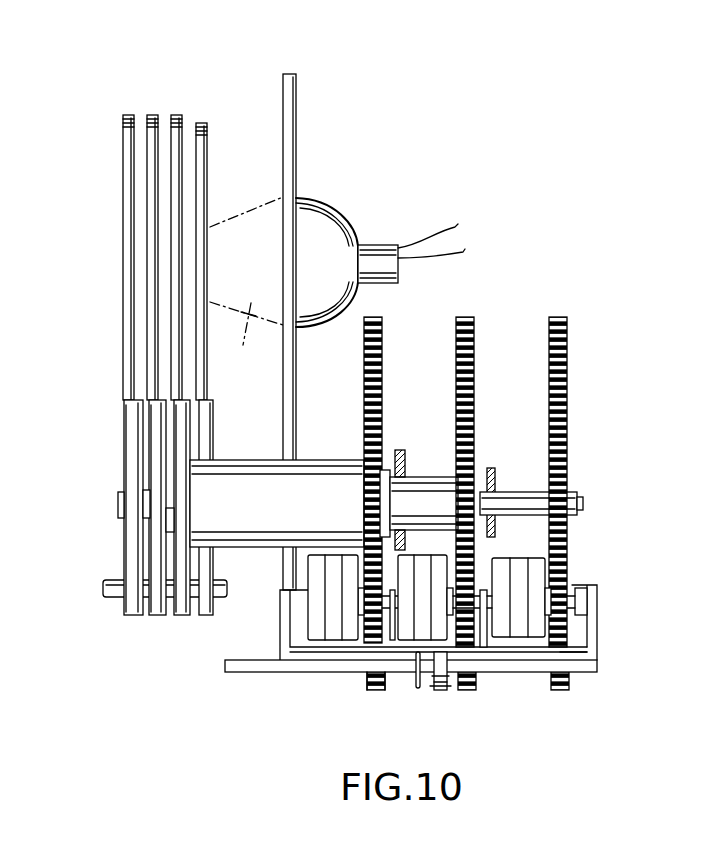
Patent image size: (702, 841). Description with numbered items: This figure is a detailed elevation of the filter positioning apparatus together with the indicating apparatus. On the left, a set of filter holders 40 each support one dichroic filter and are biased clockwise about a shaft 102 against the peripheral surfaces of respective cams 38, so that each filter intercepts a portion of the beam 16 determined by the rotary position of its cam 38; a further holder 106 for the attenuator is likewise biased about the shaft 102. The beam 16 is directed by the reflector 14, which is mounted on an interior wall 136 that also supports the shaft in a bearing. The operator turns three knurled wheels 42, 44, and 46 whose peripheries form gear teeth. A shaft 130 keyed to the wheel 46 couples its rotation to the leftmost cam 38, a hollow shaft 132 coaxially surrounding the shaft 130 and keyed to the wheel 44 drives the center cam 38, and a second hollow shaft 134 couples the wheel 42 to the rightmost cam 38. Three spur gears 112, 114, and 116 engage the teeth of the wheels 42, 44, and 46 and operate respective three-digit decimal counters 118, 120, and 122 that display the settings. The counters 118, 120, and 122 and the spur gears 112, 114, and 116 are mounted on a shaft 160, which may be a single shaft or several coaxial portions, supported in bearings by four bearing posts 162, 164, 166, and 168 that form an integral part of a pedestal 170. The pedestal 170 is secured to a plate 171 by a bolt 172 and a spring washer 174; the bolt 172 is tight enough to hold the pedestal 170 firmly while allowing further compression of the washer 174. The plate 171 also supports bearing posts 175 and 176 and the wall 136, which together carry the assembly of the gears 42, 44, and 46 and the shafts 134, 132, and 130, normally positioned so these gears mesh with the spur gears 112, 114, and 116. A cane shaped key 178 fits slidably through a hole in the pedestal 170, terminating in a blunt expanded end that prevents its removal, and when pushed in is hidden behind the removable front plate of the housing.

The reflector 14 is at (325, 216).
The beam 16 is at (246, 293).
The cams 38 is at (185, 468).
The filter holders 40 is at (126, 116).
The wheel 42 is at (383, 321).
The wheel 44 is at (476, 321).
The wheel 46 is at (568, 321).
The shaft 102 is at (110, 597).
The holder 106 is at (208, 165).
The spur gear 112 is at (368, 618).
The spur gear 114 is at (480, 580).
The spur gear 116 is at (567, 586).
The three-digit decimal counter 118 is at (333, 620).
The three-digit decimal counter 120 is at (400, 578).
The three-digit decimal counter 122 is at (524, 640).
The shaft 130 is at (526, 494).
The hollow shaft 132 is at (426, 478).
The second hollow shaft 134 is at (322, 472).
The interior wall 136 is at (303, 382).
The shaft 160 is at (580, 586).
The bearing post 162 is at (280, 628).
The bearing post 164 is at (376, 690).
The bearing post 166 is at (494, 652).
The bearing post 168 is at (590, 626).
The pedestal 170 is at (582, 651).
The plate 171 is at (248, 673).
The bolt 172 is at (438, 690).
The spring washer 174 is at (448, 692).
The bearing post 175 is at (491, 468).
The bearing post 176 is at (402, 449).
The cane shaped key 178 is at (418, 690).